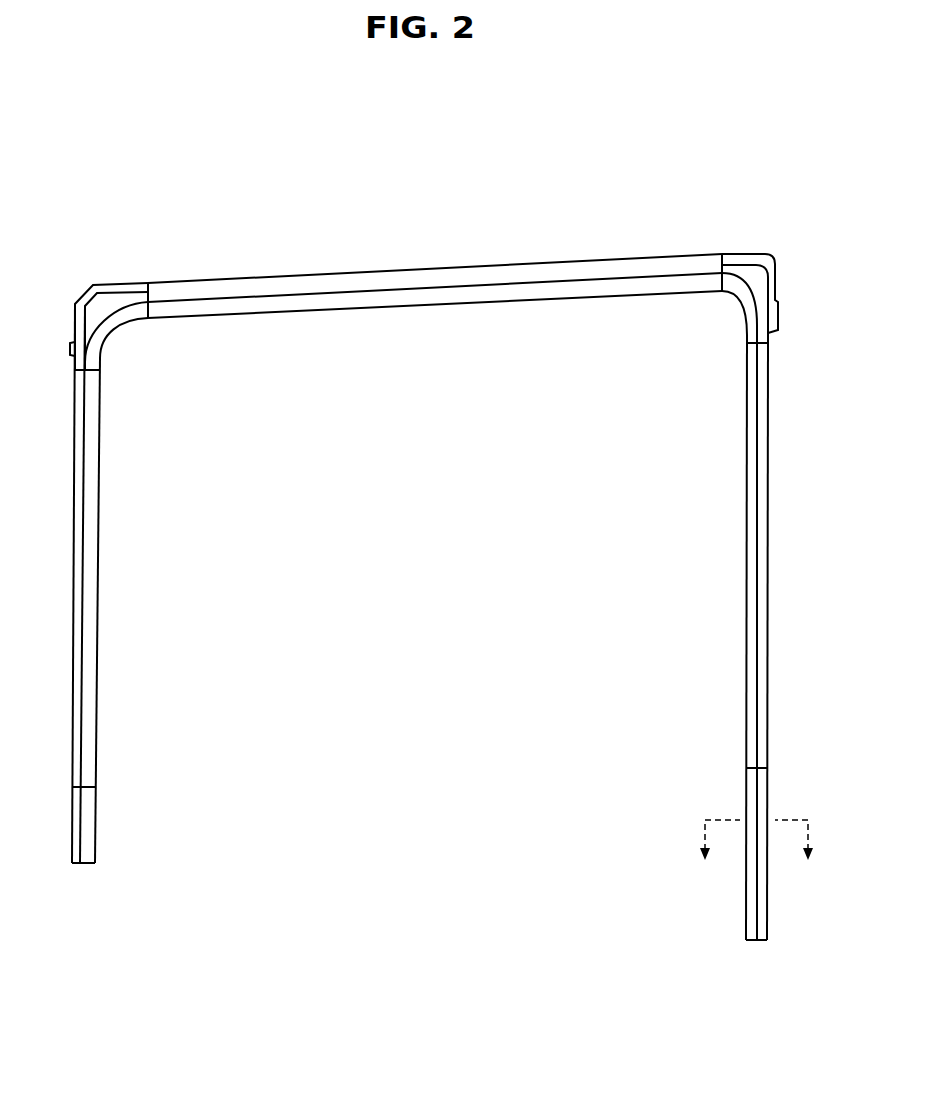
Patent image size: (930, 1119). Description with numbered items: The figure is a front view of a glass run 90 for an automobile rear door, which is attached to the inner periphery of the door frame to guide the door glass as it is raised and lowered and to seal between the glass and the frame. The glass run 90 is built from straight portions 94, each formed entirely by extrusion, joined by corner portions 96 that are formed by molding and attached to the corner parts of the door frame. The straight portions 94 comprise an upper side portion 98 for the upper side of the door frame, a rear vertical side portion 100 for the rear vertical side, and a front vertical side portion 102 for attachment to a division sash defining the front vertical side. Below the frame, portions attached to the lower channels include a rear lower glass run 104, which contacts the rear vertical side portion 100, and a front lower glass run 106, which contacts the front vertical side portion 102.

The glass run 90 is at (178, 259).
The straight portions 94 is at (355, 270).
The upper side portion 98 is at (498, 277).
The corner portions 96 is at (105, 315).
The front vertical side portion 102 is at (87, 682).
The rear vertical side portion 100 is at (752, 686).
The rear lower glass run 104 is at (748, 898).
The front lower glass run 106 is at (85, 827).